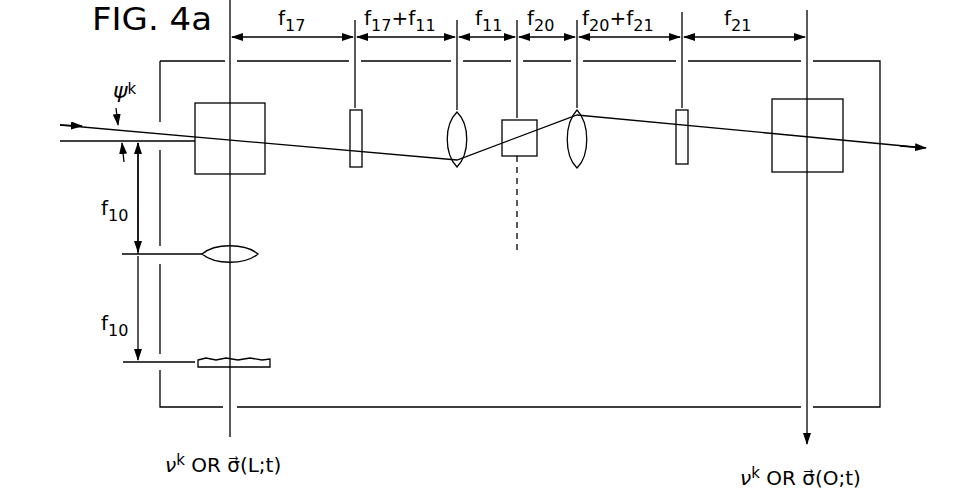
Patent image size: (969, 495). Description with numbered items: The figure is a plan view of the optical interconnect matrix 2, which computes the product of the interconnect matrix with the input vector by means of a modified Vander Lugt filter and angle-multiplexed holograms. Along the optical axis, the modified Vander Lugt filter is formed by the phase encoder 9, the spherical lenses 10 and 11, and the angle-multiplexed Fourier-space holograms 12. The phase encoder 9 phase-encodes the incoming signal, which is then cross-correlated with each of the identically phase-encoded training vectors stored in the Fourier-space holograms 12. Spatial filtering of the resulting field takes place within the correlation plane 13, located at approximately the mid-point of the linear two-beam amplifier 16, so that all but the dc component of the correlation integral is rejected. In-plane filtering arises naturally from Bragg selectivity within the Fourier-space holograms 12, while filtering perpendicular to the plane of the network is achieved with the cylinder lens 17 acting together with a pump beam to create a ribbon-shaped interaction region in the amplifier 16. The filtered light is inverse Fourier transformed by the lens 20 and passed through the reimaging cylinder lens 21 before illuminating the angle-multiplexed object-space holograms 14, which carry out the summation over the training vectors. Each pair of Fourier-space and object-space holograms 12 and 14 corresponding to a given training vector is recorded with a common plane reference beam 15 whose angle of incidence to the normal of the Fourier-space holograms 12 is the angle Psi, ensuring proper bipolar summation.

The optical interconnect matrix 2 is at (525, 408).
The phase encoder 9 is at (270, 359).
The spherical lens 10 is at (258, 256).
The spherical lens 11 is at (448, 138).
The angle-multiplexed Fourier-space holograms 12 is at (265, 174).
The correlation plane 13 is at (518, 237).
The angle-multiplexed object-space holograms 14 is at (786, 172).
The reference beam 15 is at (100, 125).
The linear two-beam amplifier 16 is at (505, 157).
The cylinder lens 17 is at (360, 167).
The lens 20 is at (580, 168).
The reimaging cylinder lens 21 is at (682, 164).